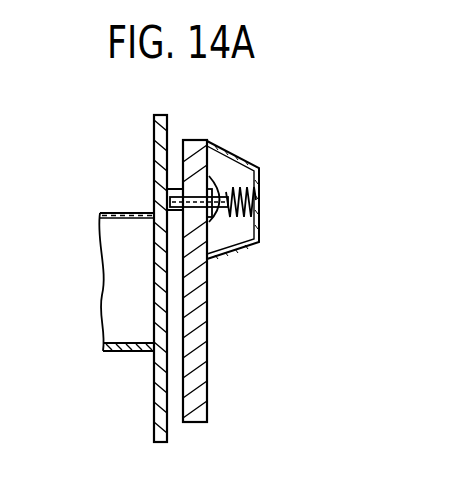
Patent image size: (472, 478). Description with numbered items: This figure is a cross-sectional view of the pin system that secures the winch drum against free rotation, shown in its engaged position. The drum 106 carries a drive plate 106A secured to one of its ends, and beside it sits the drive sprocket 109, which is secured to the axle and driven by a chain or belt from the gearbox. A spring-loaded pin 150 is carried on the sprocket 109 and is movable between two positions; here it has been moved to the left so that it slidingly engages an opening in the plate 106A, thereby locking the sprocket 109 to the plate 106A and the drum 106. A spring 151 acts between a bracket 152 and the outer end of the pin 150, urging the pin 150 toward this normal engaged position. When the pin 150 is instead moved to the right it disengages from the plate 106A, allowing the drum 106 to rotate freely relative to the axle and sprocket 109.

The drum 106 is at (125, 214).
The drive plate 106A is at (176, 190).
The drive sprocket 109 is at (203, 388).
The spring-loaded pin 150 is at (210, 220).
The spring 151 is at (260, 184).
The bracket 152 is at (238, 158).